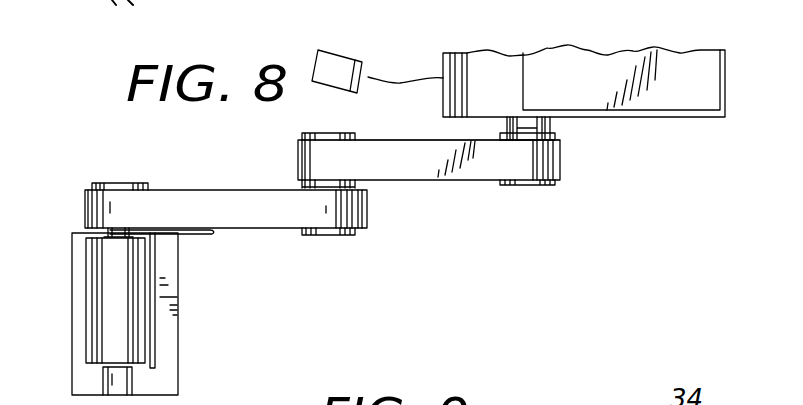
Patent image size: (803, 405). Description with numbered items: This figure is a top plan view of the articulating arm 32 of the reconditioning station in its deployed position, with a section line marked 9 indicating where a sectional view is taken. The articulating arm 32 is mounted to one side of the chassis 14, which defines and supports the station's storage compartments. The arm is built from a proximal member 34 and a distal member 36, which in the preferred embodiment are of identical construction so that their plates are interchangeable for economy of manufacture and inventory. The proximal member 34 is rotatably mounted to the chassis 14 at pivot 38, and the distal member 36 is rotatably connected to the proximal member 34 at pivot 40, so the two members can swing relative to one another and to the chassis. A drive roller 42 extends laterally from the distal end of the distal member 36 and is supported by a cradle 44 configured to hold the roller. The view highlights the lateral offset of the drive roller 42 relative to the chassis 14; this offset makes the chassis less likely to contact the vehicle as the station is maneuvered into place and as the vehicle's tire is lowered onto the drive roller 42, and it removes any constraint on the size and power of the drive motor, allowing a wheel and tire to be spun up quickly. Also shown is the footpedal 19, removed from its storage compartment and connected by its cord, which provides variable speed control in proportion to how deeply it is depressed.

The chassis 14 is at (727, 88).
The footpedal 19 is at (348, 48).
The rotatable mounting of proximal arm 38 is at (552, 128).
The proximal member 34 is at (480, 168).
The rotatable connection of distal arm 40 is at (302, 184).
The distal member 36 is at (237, 217).
The cradle 44 is at (163, 380).
The drive roller 42 is at (140, 330).
The articulating arm 32 is at (284, 274).
The section line 9- 9 is at (83, 222).